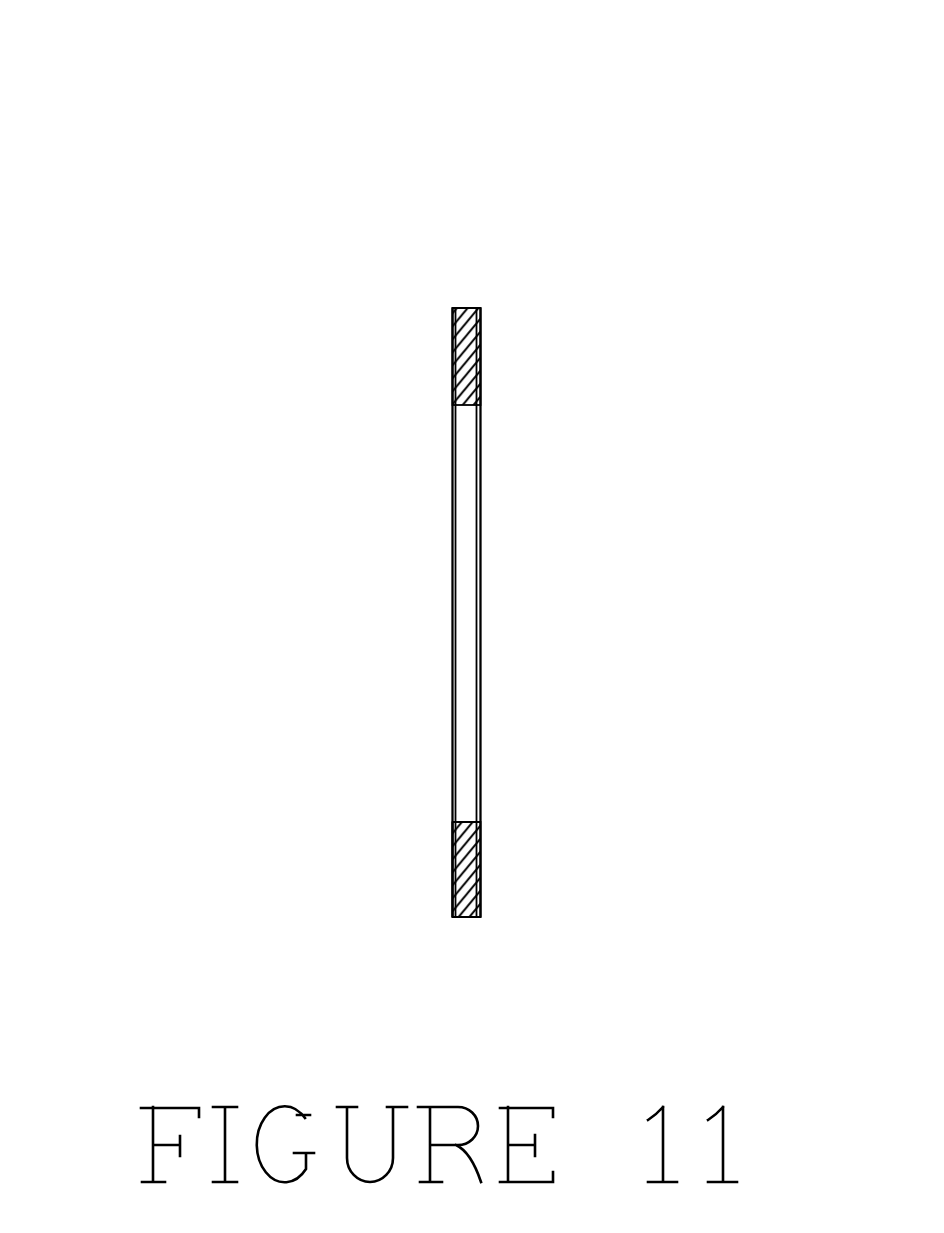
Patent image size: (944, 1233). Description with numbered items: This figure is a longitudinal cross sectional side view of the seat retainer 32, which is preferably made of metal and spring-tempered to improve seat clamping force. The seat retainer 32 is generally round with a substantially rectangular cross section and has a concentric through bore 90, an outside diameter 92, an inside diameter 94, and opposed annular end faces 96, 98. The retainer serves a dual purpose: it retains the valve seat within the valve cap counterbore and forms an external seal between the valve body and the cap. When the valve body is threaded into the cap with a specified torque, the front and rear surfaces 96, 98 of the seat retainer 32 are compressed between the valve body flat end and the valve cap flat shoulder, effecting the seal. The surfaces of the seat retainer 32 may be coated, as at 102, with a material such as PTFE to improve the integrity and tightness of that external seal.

The seat retainer 32 is at (450, 303).
The annular end face 98 is at (452, 375).
The through bore 90 is at (478, 417).
The inside diameter 94 is at (461, 819).
The annular end face 96 is at (482, 863).
The coating 102 is at (452, 857).
The outside diameter 92 is at (467, 917).